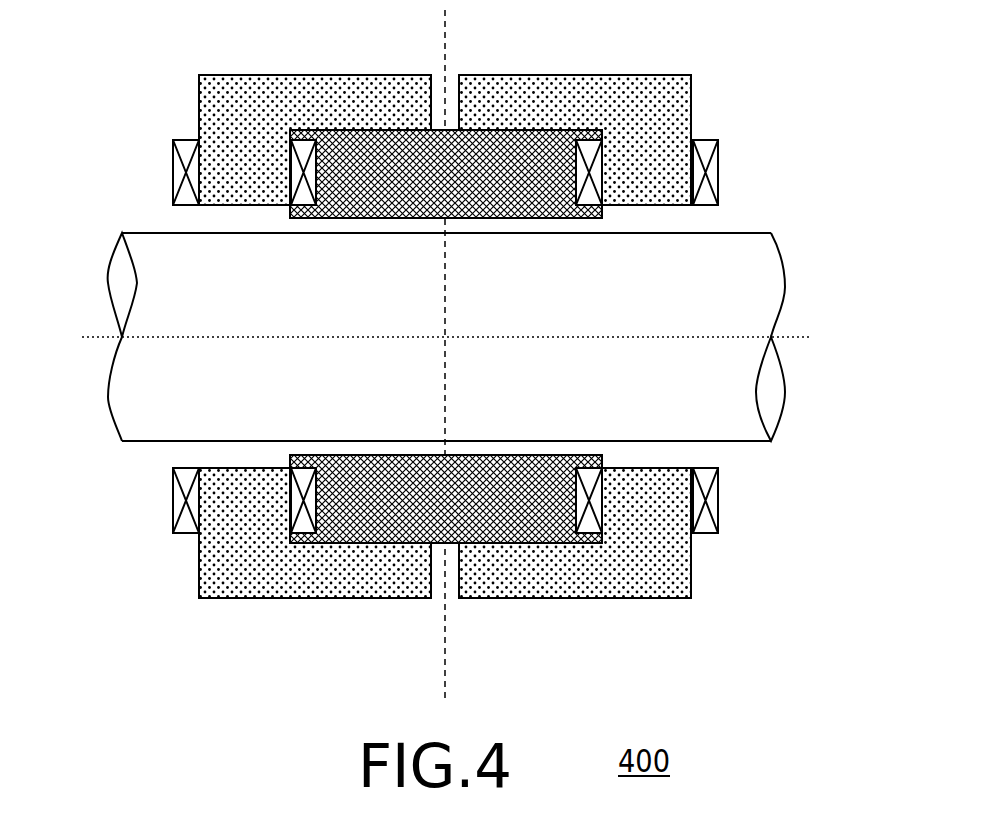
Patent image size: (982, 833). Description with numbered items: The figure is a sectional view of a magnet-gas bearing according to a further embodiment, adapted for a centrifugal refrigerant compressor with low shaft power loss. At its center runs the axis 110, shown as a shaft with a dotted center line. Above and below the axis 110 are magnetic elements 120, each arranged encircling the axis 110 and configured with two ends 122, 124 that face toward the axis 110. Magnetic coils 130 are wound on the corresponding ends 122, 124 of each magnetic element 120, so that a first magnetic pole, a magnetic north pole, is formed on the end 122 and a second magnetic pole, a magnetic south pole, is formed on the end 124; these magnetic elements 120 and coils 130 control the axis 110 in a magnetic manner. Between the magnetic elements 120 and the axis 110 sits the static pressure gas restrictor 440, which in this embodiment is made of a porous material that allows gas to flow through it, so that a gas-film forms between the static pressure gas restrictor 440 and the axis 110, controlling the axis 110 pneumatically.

The axis 110 is at (128, 390).
The magnetic element 120 is at (442, 341).
The end 122 is at (228, 178).
The end 124 is at (662, 185).
The magnetic coil 130 is at (297, 140).
The static pressure gas restrictor 440 is at (492, 135).